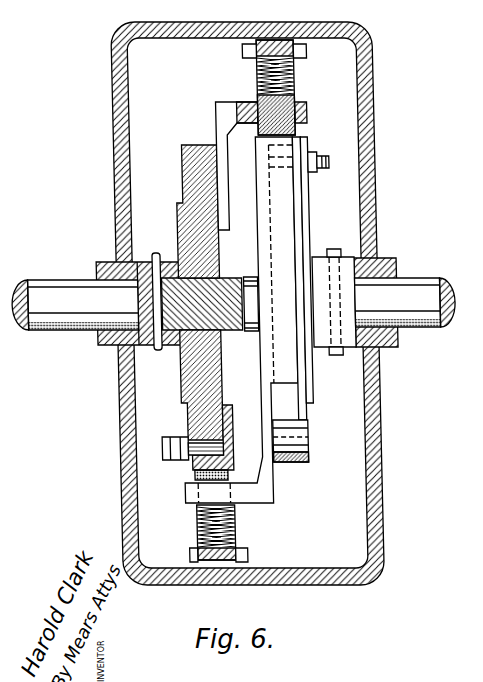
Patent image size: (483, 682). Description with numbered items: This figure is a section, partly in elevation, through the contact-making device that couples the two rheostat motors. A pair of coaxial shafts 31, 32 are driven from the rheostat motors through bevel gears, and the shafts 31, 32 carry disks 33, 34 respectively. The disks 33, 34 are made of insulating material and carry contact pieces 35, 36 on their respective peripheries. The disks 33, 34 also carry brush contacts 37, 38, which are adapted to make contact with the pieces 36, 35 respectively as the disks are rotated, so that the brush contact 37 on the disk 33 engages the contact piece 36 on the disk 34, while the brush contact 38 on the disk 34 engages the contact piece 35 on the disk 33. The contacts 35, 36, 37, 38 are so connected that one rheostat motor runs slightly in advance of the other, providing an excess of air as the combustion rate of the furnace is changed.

The coaxial shaft 31 is at (413, 290).
The coaxial shaft 32 is at (48, 297).
The disk 33 is at (301, 463).
The disk 34 is at (198, 418).
The contact piece 35 is at (264, 342).
The contact piece 36 is at (230, 433).
The brush contact 37 is at (193, 531).
The brush contact 38 is at (300, 73).